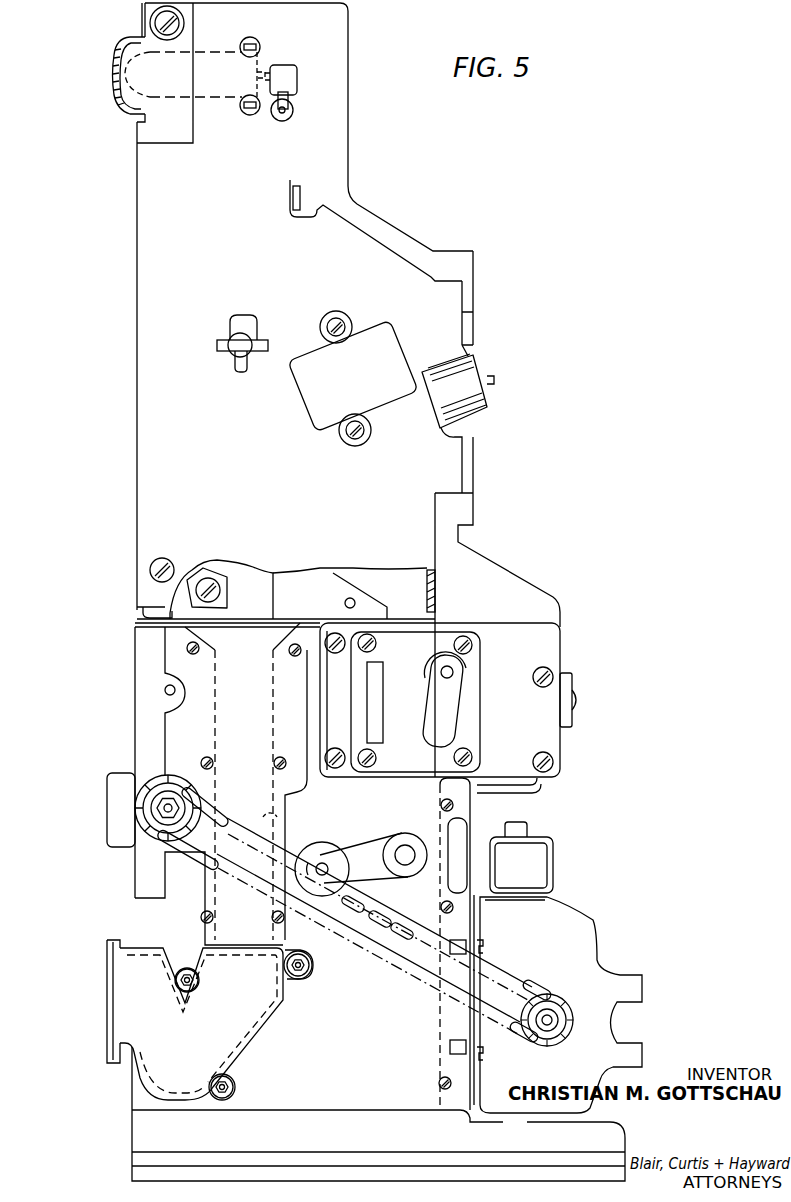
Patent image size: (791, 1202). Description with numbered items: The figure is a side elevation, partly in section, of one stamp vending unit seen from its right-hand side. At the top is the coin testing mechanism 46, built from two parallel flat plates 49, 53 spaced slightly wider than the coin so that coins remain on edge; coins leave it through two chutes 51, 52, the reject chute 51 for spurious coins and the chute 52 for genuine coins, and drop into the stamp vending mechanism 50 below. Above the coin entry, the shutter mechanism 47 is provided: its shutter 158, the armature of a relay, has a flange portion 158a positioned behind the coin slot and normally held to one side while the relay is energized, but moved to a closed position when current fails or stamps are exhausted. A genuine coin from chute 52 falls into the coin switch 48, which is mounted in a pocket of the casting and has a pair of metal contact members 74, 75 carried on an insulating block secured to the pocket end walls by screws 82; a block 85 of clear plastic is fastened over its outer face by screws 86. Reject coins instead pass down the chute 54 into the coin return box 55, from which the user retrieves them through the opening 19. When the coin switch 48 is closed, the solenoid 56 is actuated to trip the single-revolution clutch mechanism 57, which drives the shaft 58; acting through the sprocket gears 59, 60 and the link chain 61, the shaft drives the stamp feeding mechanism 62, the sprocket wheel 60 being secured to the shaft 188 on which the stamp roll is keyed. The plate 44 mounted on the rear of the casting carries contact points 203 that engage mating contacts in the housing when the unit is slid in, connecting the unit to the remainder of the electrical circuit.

The opening 19 is at (107, 1006).
The plate 44 is at (563, 727).
The coin testing mechanism 46 is at (126, 410).
The shutter mechanism 47 is at (268, 55).
The coin switch 48 is at (460, 693).
The flat plate 49 is at (292, 271).
The stamp vending mechanism 50 is at (121, 651).
The chute 51 is at (258, 573).
The chute 52 is at (385, 575).
The flat plate 53 is at (401, 240).
The chute 54 is at (278, 818).
The coin return box 55 is at (252, 1045).
The solenoid 56 is at (570, 863).
The clutch mechanism 57 is at (608, 937).
The shaft 58 is at (549, 1019).
The sprocket gear 59 is at (570, 1028).
The sprocket wheel 60 is at (153, 807).
The link chain 61 is at (413, 973).
The stamp feeding mechanism 62 is at (122, 723).
The contact member 74 is at (379, 708).
The contact member 75 is at (441, 731).
The screws 82 is at (335, 749).
The block 85 is at (472, 667).
The screws 86 is at (463, 638).
The shutter 158 is at (206, 62).
The flange portion 158a is at (112, 60).
The shaft 188 is at (166, 815).
The contact points 203 is at (580, 700).